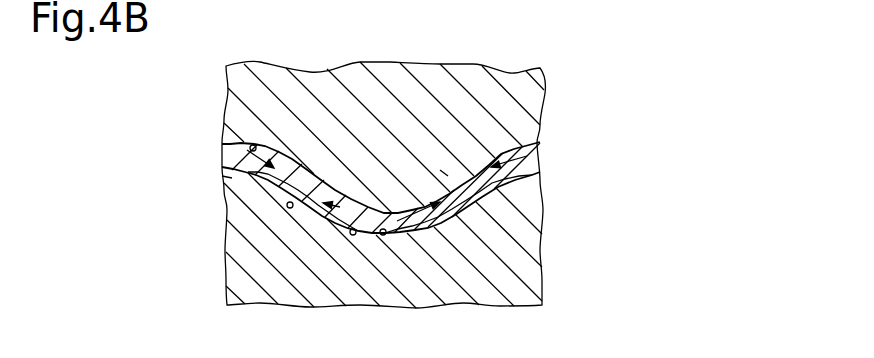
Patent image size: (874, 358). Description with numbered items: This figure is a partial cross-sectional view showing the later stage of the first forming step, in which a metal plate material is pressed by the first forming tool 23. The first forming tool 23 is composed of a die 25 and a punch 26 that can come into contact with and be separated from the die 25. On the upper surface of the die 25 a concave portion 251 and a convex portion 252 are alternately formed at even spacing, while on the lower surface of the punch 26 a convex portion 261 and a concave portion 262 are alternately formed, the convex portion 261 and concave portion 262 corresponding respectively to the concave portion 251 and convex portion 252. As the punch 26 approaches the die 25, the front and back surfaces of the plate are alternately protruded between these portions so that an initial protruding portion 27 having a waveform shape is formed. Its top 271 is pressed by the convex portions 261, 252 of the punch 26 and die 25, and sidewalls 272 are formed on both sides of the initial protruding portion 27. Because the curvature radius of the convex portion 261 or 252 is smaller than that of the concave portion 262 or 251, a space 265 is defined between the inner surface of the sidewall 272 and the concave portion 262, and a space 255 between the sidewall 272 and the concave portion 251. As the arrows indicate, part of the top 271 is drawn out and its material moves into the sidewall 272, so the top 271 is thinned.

The first forming tool 23 is at (592, 117).
The die 25 is at (530, 178).
The punch 26 is at (533, 132).
The initial protruding portion 27 is at (224, 160).
The top 271 is at (224, 134).
The sidewall 272 is at (318, 171).
The concave portion 251 is at (353, 236).
The convex portion 252 is at (224, 176).
The space 255 is at (289, 208).
The convex portion 261 is at (385, 236).
The concave portion 262 is at (251, 145).
The space 265 is at (444, 172).